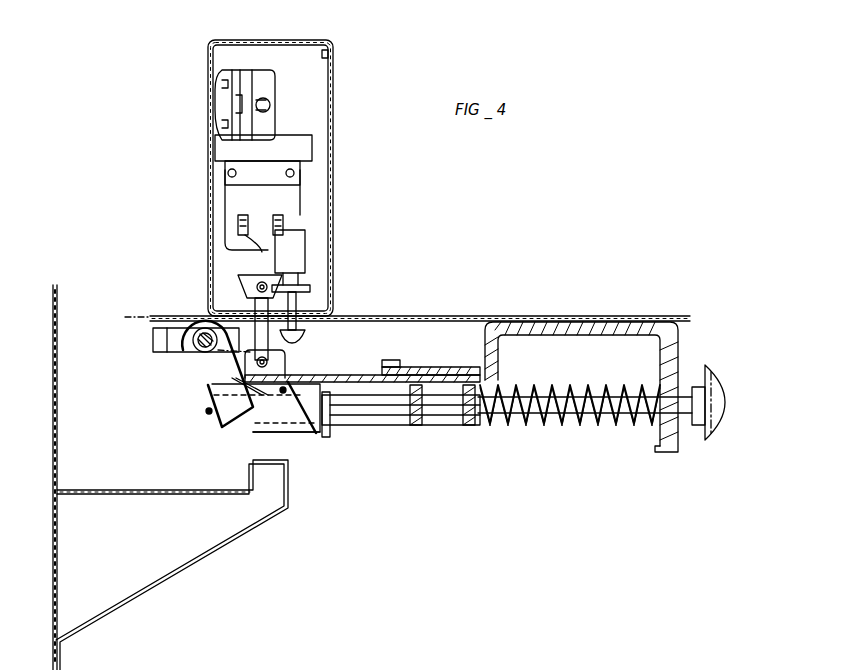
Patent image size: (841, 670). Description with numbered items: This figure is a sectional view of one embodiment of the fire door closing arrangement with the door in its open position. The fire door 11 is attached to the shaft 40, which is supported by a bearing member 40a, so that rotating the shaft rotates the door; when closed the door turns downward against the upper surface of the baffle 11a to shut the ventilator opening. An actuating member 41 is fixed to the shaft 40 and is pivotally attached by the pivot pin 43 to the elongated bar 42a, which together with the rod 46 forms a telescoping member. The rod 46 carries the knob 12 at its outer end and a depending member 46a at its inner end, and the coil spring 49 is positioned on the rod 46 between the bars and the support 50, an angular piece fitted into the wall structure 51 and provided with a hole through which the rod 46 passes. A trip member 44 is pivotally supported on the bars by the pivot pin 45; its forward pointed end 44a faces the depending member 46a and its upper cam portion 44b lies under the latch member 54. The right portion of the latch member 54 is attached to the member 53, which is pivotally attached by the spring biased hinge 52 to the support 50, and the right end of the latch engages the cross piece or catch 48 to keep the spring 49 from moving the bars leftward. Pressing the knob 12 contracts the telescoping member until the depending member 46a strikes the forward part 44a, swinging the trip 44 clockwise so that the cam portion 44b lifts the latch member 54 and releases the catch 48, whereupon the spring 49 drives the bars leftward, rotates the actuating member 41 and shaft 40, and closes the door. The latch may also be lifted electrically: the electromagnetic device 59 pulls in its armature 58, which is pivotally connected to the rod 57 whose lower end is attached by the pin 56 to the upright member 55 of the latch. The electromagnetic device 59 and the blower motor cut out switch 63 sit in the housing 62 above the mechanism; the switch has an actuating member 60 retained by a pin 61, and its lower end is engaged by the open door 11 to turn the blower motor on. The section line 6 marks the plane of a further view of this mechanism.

The section line 6 is at (150, 338).
The fire door 11 is at (225, 350).
The baffle 11a is at (250, 460).
The knob 12 is at (718, 372).
The shaft 40 is at (153, 340).
The bearing member 40a is at (172, 318).
The actuating member 41 is at (205, 385).
The elongated bar 42a is at (255, 420).
The pivot pin 43 is at (207, 414).
The trip member 44 is at (286, 436).
The forward pointed end of trip member 44a is at (302, 438).
The upper cam portion of trip member 44b is at (245, 382).
The pivot pin 45 is at (295, 375).
The rod 46 is at (590, 395).
The depending member 46a is at (320, 430).
The cross piece or catch 48 is at (432, 367).
The coil spring 49 is at (530, 392).
The support 50 is at (572, 323).
The wall structure 51 is at (678, 350).
The spring biased hinge 52 is at (472, 360).
The member 53 is at (393, 360).
The latch member 54 is at (380, 368).
The upright member 55 is at (292, 365).
The pin 56 is at (268, 360).
The rod 57 is at (257, 336).
The armature 58 is at (240, 282).
The electromagnetic device 59 is at (240, 207).
The actuating member 60 is at (300, 322).
The pin 61 is at (310, 288).
The housing 62 is at (333, 245).
The blower motor cut out switch 63 is at (297, 257).